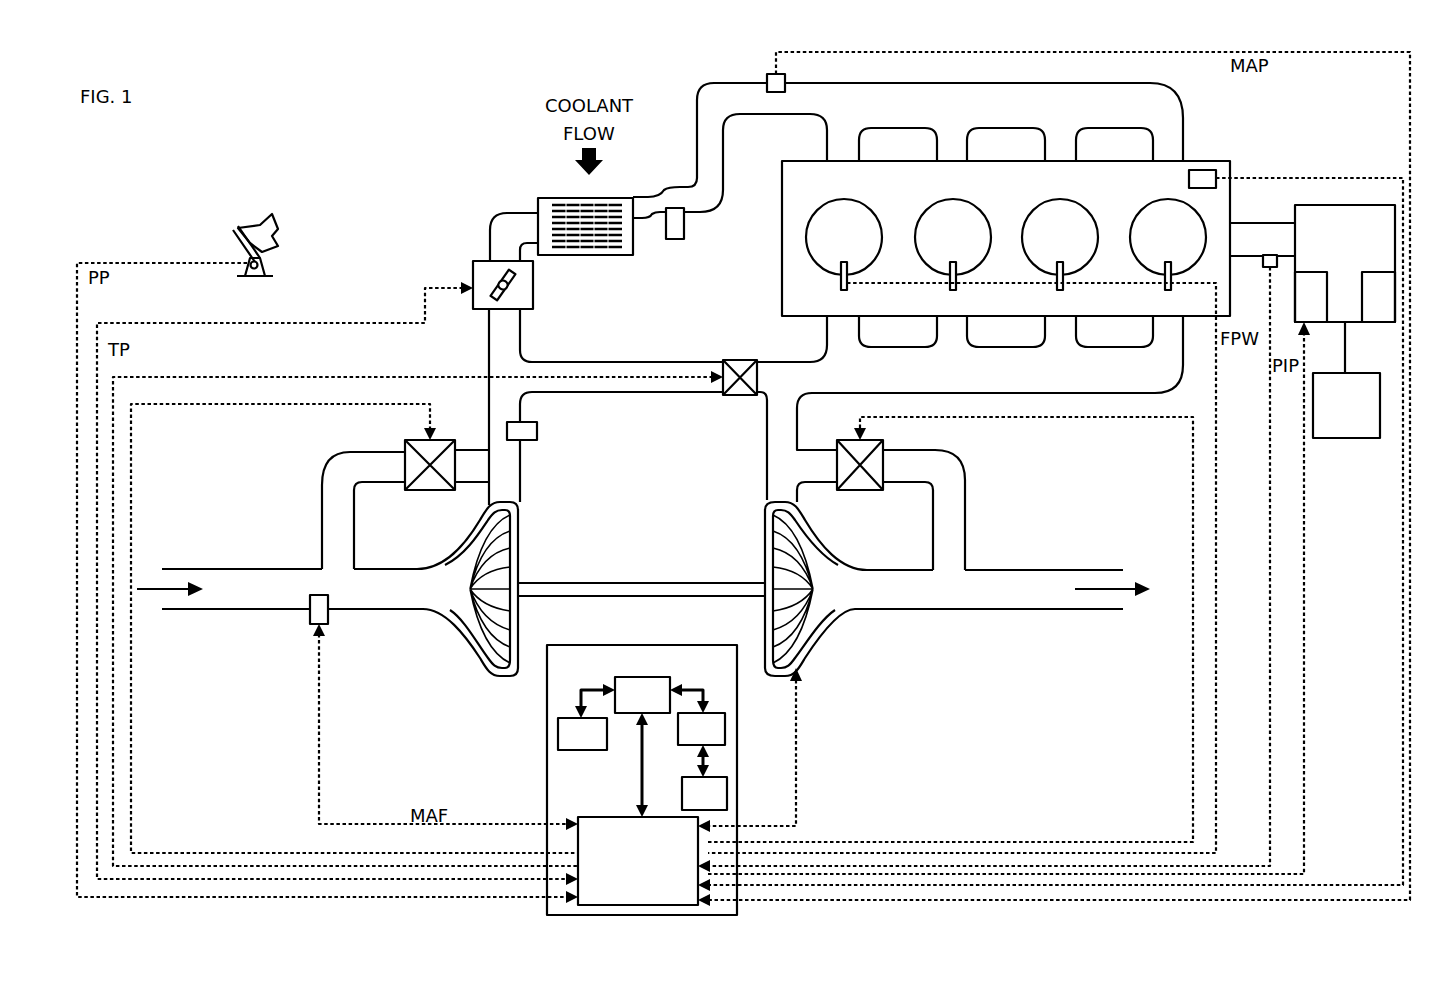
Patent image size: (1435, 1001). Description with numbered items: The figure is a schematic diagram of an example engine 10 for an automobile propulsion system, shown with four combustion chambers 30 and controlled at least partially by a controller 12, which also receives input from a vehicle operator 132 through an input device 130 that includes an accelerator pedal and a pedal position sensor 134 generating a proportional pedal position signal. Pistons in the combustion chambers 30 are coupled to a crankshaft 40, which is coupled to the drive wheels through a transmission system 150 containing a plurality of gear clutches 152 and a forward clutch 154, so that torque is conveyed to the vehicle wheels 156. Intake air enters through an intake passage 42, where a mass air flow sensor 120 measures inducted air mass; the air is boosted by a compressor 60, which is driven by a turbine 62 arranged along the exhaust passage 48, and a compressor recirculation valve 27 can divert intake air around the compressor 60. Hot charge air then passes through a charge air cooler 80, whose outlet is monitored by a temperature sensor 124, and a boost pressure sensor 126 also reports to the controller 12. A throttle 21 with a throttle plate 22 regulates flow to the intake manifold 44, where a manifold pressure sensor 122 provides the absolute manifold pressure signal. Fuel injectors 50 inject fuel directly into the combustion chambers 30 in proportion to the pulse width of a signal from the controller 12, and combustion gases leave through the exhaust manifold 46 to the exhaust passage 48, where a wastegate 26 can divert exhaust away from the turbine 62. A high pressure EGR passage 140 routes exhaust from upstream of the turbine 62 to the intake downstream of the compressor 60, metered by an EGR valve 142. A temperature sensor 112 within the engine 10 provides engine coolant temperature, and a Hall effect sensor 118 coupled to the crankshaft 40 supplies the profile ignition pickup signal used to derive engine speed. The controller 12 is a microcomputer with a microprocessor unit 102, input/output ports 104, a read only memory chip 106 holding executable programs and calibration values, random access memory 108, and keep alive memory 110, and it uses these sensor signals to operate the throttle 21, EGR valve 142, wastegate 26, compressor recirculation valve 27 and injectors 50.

The engine 10 is at (1006, 238).
The controller 12 is at (624, 780).
The throttle 21 is at (495, 365).
The throttle plate 22 is at (510, 297).
The wastegate 26 is at (883, 447).
The compressor recirculation valve 27 is at (405, 448).
The combustion chamber 30 is at (1006, 237).
The crankshaft 40 is at (1253, 222).
The intake passage 42 is at (280, 589).
The intake manifold 44 is at (933, 147).
The exhaust manifold 46 is at (970, 409).
The exhaust passage 48 is at (1002, 589).
The fuel injector 50 is at (1165, 283).
The compressor 60 is at (472, 636).
The turbine 62 is at (808, 545).
The charge air cooler 80 is at (555, 198).
The microprocessor unit 102 is at (610, 686).
The input/output ports 104 is at (638, 809).
The read only memory chip 106 is at (558, 748).
The random access memory 108 is at (725, 720).
The keep alive memory 110 is at (727, 782).
The temperature sensor 112 is at (1203, 170).
The Hall effect sensor 118 is at (1263, 270).
The mass air flow sensor 120 is at (328, 612).
The manifold pressure sensor 122 is at (767, 80).
The temperature sensor 124 is at (675, 239).
The boost pressure sensor 126 is at (537, 432).
The input device 130 is at (272, 237).
The vehicle operator 132 is at (280, 228).
The pedal position sensor 134 is at (268, 268).
The EGR passage 140 is at (623, 367).
The EGR valve 142 is at (740, 357).
The transmission system 150 is at (1345, 263).
The gear clutches 152 is at (1312, 297).
The forward clutch 154 is at (1379, 297).
The vehicle wheels 156 is at (1346, 380).